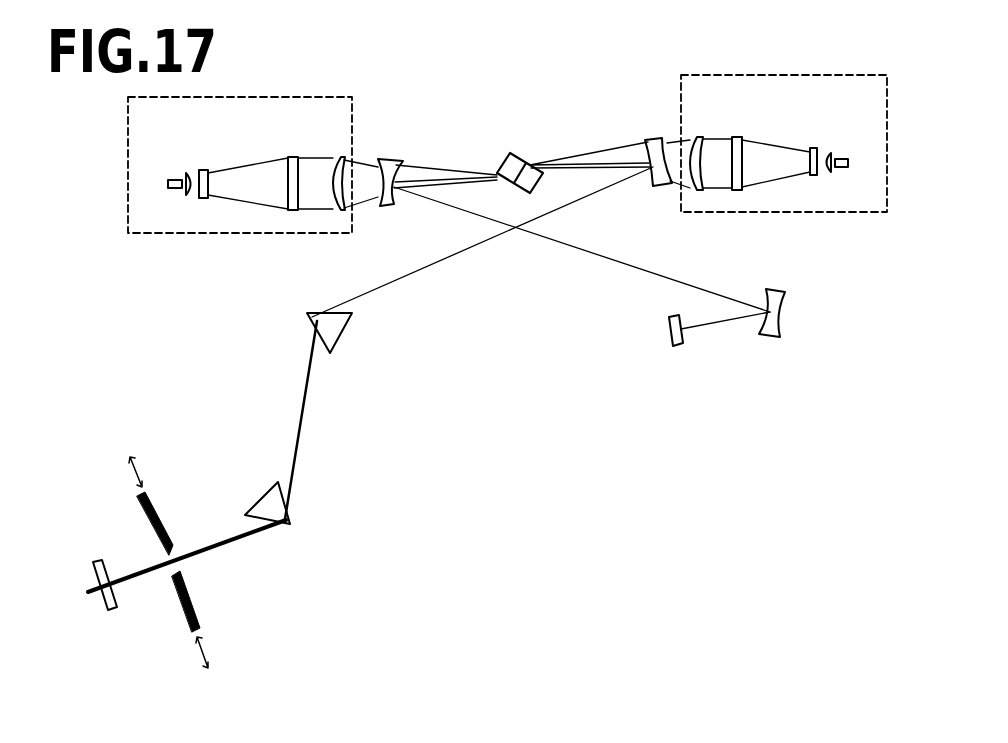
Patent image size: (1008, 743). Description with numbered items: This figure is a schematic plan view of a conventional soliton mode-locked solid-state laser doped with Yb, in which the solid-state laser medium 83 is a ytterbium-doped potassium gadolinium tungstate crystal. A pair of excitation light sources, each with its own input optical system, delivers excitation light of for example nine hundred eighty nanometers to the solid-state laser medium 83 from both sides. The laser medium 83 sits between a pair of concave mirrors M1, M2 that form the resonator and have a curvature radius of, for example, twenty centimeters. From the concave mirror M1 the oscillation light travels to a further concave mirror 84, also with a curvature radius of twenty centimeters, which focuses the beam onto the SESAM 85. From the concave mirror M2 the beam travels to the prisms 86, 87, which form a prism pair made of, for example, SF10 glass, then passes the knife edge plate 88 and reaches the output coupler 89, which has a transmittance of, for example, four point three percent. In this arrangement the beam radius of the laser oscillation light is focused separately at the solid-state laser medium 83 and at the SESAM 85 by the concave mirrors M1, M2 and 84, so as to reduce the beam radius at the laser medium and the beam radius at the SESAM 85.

The solid-state laser medium 83 is at (514, 152).
The concave mirror M1 is at (396, 158).
The concave mirror M2 is at (655, 137).
The concave mirror 84 is at (783, 322).
The SESAM 85 is at (678, 347).
The prism 86 is at (343, 337).
The prism 87 is at (258, 501).
The knife edge plate 88 is at (194, 605).
The output coupler 89 is at (112, 611).